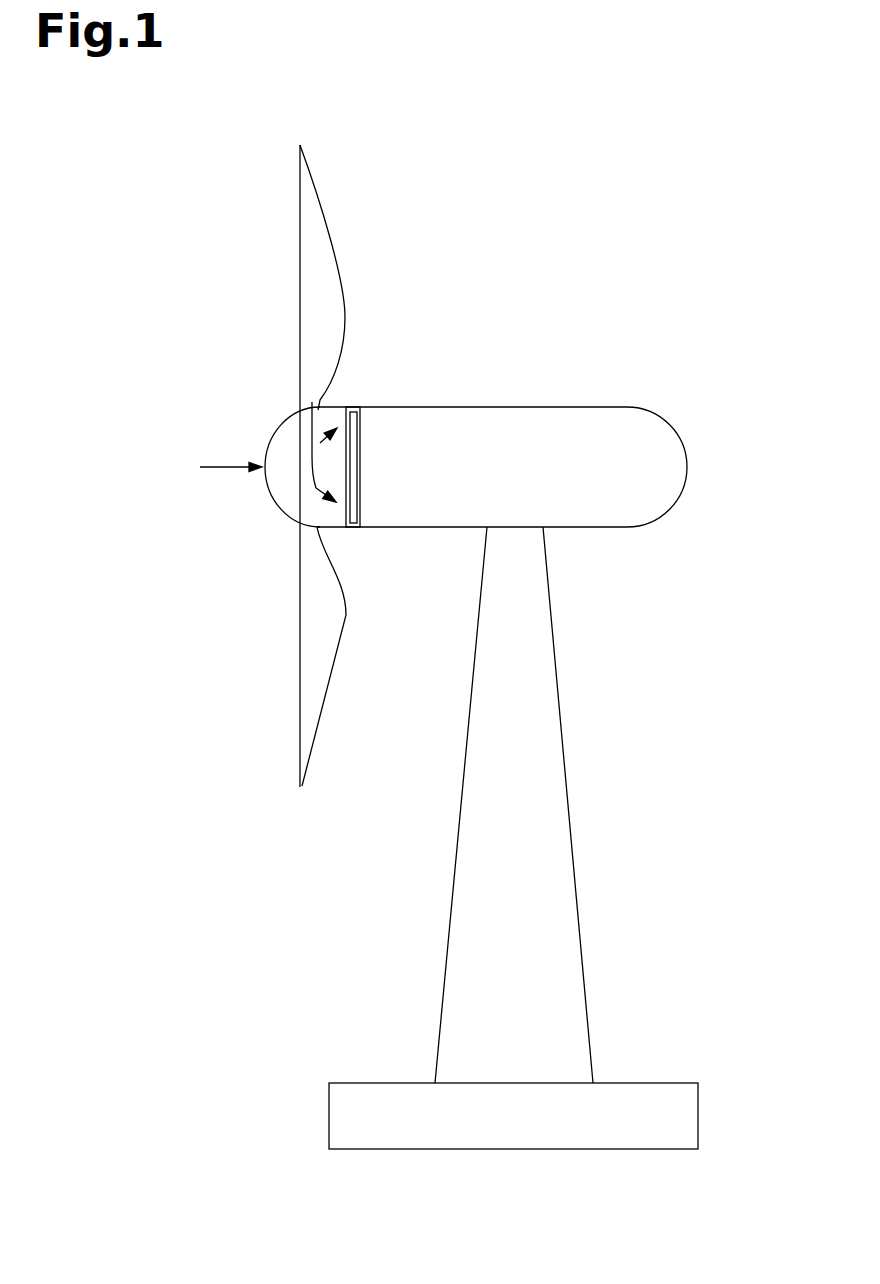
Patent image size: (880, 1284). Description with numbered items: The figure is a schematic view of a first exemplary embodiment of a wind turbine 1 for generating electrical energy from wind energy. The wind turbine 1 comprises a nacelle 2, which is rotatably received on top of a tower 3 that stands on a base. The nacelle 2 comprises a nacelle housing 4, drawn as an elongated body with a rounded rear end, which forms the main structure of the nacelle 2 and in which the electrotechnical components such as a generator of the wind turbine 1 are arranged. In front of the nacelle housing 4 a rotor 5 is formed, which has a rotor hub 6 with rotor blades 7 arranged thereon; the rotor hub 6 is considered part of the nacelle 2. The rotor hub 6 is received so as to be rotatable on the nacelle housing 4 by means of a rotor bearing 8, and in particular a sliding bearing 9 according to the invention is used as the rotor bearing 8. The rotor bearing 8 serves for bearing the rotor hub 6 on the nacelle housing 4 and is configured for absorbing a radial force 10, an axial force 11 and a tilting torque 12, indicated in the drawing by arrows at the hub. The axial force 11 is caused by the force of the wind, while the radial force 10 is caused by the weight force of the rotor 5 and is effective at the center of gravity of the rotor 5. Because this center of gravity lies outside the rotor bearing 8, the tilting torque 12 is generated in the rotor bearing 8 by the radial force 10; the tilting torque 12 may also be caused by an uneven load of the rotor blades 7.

The wind turbine 1 is at (602, 183).
The nacelle 2 is at (585, 322).
The tower 3 is at (540, 762).
The nacelle housing 4 is at (583, 427).
The rotor 5 is at (263, 427).
The rotor hub 6 is at (310, 507).
The rotor blades 7 is at (325, 295).
The rotor bearing 8 is at (355, 404).
The sliding bearing 9 is at (358, 548).
The radial force 10 is at (312, 445).
The axial force 11 is at (232, 470).
The tilting torque 12 is at (316, 488).